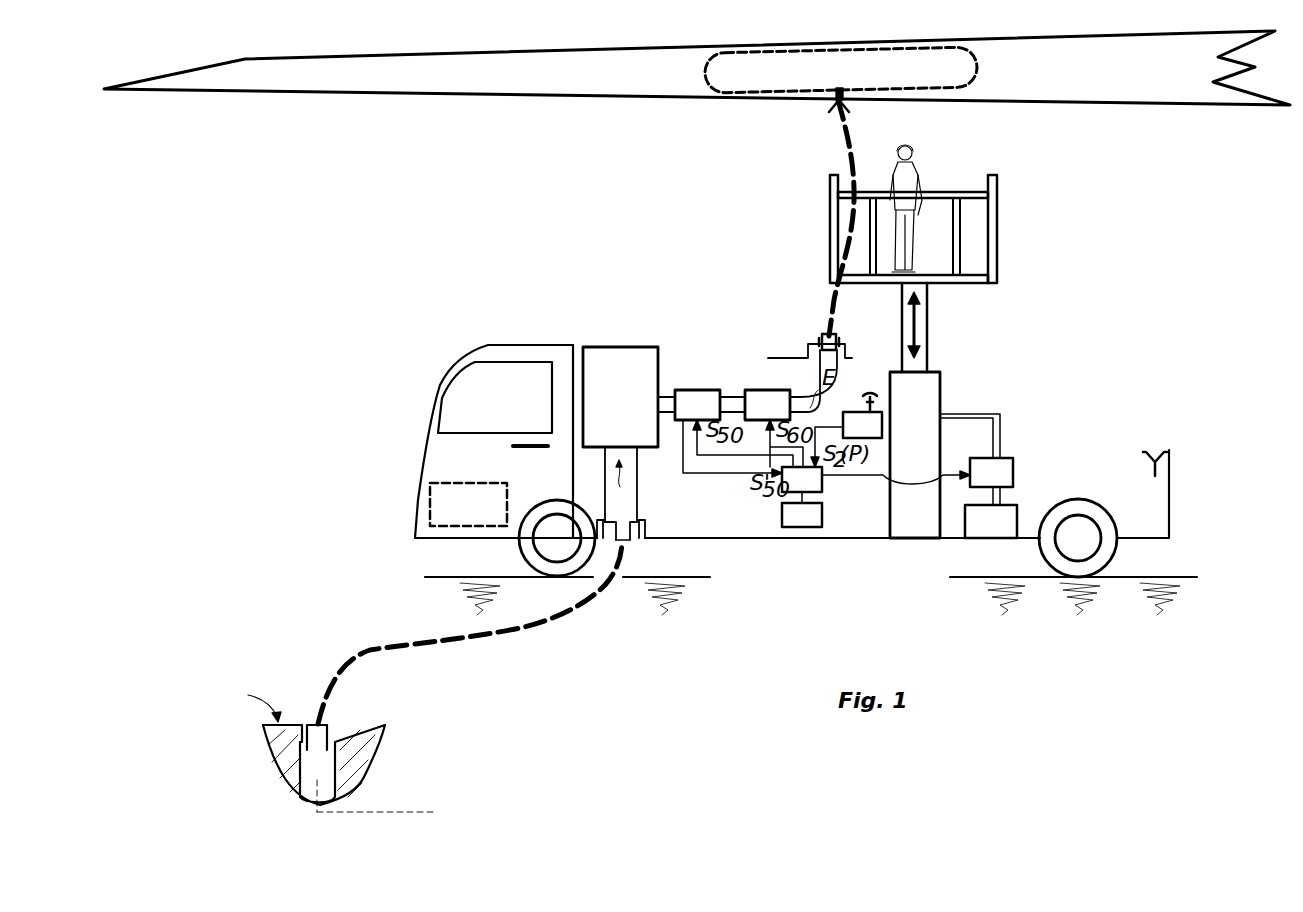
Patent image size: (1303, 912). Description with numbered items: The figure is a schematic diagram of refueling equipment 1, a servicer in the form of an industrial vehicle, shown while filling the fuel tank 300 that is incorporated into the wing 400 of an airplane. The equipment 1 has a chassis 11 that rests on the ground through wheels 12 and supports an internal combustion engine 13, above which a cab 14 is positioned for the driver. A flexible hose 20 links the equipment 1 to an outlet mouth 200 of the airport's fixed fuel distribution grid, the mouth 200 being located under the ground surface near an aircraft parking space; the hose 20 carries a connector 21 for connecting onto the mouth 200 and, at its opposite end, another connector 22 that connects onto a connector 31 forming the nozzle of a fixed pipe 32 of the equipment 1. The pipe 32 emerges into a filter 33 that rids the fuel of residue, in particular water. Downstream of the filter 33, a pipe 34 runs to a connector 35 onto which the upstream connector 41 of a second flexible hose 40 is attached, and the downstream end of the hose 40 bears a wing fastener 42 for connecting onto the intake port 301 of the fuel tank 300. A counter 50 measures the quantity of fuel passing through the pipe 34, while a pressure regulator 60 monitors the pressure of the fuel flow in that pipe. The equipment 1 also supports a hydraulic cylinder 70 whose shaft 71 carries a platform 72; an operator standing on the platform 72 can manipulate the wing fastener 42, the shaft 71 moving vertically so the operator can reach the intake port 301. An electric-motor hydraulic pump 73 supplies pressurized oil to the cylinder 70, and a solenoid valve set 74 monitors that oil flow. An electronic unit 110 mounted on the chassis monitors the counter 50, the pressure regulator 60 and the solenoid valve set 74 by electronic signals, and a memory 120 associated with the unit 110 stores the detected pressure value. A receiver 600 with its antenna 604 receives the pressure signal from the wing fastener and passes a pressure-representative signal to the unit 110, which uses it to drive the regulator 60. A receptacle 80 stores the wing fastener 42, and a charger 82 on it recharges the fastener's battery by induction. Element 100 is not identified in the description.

The refueling equipment 1 is at (1137, 284).
The chassis 11 is at (878, 541).
The wheels 12 is at (528, 555).
The internal combustion engine 13 is at (468, 504).
The cab 14 is at (526, 345).
The flexible hose 20 is at (452, 648).
The connector 21 is at (328, 722).
The connector 22 is at (605, 541).
The connector 31 is at (628, 542).
The fixed pipe 32 is at (612, 462).
The filter 33 is at (620, 397).
The pipe 34 is at (727, 397).
The connector 35 is at (846, 347).
The second flexible hose 40 is at (832, 300).
The upstream connector 41 is at (835, 336).
The wing fastener 42 is at (842, 110).
The counter 50 is at (697, 405).
The pressure regulator 60 is at (767, 405).
The hydraulic cylinder 70 is at (941, 393).
The shaft 71 is at (929, 355).
The platform 72 is at (997, 225).
The electric-motor hydraulic pump 73 is at (991, 512).
The solenoid valve set 74 is at (976, 450).
The receptacle 80 is at (1155, 450).
The charger 82 is at (1170, 450).
The flow sensor 100 is at (614, 497).
The electronic unit 110 is at (804, 479).
The memory 120 is at (804, 509).
The outlet mouth 200 is at (300, 720).
The fuel tank 300 is at (841, 70).
The intake port 301 is at (840, 88).
The wing 400 is at (697, 68).
The receiver 600 is at (866, 425).
The antenna 604 is at (850, 410).